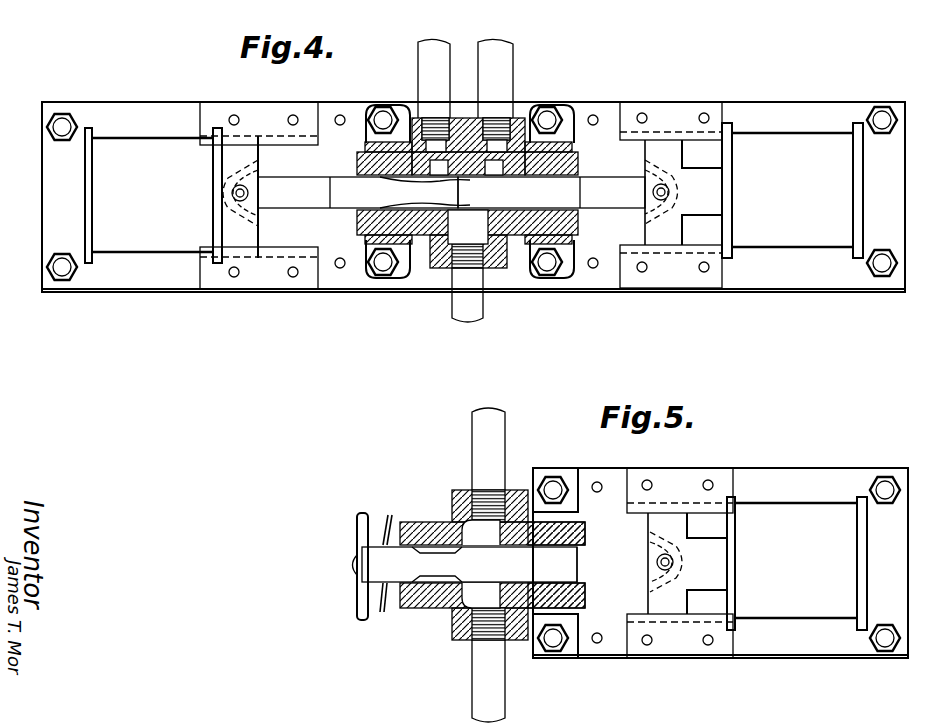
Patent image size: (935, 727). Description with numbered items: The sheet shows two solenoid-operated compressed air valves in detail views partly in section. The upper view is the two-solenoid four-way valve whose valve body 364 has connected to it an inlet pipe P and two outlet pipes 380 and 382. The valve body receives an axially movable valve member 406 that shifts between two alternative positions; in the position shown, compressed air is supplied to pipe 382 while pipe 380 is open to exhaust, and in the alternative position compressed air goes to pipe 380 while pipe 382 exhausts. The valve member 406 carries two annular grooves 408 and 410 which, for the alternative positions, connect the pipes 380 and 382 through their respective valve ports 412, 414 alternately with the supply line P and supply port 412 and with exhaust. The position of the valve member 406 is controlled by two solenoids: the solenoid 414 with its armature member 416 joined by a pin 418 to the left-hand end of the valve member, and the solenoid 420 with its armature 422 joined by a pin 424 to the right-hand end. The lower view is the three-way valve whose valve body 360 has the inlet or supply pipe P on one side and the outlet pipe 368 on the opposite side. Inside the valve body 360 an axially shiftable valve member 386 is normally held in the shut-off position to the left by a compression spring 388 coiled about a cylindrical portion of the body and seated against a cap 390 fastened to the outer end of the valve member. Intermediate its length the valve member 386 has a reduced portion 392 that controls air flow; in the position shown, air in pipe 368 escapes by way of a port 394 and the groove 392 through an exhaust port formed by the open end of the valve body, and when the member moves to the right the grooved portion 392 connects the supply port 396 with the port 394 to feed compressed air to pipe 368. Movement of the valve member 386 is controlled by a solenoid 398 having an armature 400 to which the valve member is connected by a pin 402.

In FIG. 4, the solenoid 414 is at (165, 145).
In FIG. 4, the solenoid 420 is at (795, 143).
In FIG. 4, the outlet pipe 380 is at (428, 52).
In FIG. 4, the outlet pipe 382 is at (508, 68).
In FIG. 4, the valve body 364 is at (416, 118).
In FIG. 4, the valve port 412 is at (357, 166).
In FIG. 4, the annular groove 408 is at (405, 184).
In FIG. 4, the annular groove 410 is at (490, 184).
In FIG. 4, the valve member 406 is at (372, 214).
In FIG. 4, the pin 418 is at (245, 188).
In FIG. 4, the armature member 416 is at (240, 230).
In FIG. 4, the pin 424 is at (660, 200).
In FIG. 4, the armature 422 is at (702, 205).
In FIG. 4, the inlet pipe P is at (458, 302).
In FIG. 5, the inlet pipe P is at (480, 698).
In FIG. 5, the solenoid 398 is at (808, 510).
In FIG. 5, the armature 400 is at (700, 545).
In FIG. 5, the pin 402 is at (662, 570).
In FIG. 5, the outlet pipe 368 is at (478, 432).
In FIG. 5, the valve body 360 is at (462, 492).
In FIG. 5, the port 394 is at (505, 515).
In FIG. 5, the valve member 386 is at (372, 556).
In FIG. 5, the reduced portion 392 is at (462, 578).
In FIG. 5, the compression spring 388 is at (388, 520).
In FIG. 5, the cap 390 is at (360, 592).
In FIG. 5, the supply port 396 is at (510, 615).